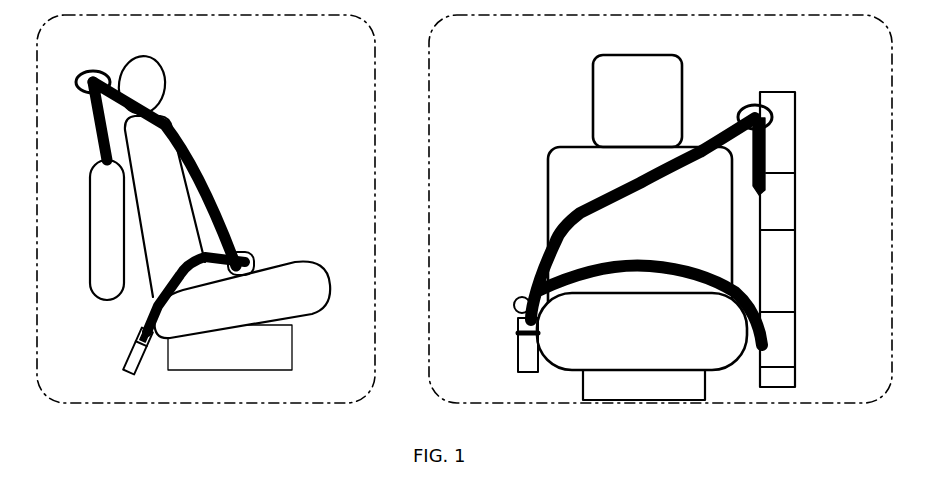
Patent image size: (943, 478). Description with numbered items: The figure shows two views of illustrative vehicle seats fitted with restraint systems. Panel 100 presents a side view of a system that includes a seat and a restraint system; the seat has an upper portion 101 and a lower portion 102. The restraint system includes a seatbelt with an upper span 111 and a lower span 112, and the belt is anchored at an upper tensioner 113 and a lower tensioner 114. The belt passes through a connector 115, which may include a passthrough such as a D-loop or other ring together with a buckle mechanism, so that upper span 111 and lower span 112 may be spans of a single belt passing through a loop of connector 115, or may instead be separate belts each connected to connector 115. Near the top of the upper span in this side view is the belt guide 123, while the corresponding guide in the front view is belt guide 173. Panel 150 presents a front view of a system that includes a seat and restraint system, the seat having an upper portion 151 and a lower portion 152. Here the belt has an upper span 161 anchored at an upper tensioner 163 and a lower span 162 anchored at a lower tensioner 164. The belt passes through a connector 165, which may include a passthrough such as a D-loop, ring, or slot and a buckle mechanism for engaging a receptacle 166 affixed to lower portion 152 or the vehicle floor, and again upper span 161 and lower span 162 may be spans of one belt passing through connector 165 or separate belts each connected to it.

The panel 100 is at (206, 209).
The upper portion 101 is at (165, 183).
The lower portion 102 is at (308, 262).
The upper span 111 is at (190, 148).
The lower span 112 is at (200, 253).
The upper tensioner 113 is at (100, 300).
The lower tensioner 114 is at (130, 346).
The connector 115 is at (246, 252).
The D-ring belt guide 123 is at (93, 71).
The panel 150 is at (660, 209).
The upper portion 151 is at (640, 232).
The lower portion 152 is at (642, 331).
The upper span 161 is at (548, 243).
The lower span 162 is at (694, 266).
The upper tensioner 163 is at (796, 205).
The lower tensioner 164 is at (796, 345).
The connector 165 is at (518, 327).
The receptacle 166 is at (518, 362).
The D-ring belt guide 173 is at (755, 106).